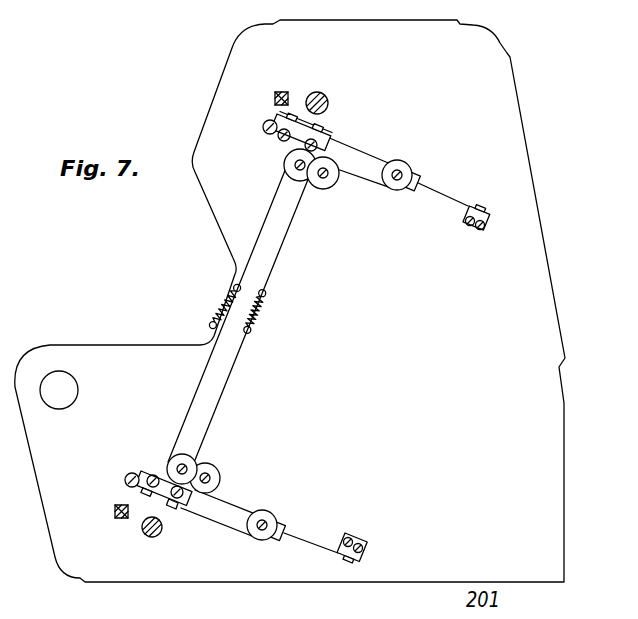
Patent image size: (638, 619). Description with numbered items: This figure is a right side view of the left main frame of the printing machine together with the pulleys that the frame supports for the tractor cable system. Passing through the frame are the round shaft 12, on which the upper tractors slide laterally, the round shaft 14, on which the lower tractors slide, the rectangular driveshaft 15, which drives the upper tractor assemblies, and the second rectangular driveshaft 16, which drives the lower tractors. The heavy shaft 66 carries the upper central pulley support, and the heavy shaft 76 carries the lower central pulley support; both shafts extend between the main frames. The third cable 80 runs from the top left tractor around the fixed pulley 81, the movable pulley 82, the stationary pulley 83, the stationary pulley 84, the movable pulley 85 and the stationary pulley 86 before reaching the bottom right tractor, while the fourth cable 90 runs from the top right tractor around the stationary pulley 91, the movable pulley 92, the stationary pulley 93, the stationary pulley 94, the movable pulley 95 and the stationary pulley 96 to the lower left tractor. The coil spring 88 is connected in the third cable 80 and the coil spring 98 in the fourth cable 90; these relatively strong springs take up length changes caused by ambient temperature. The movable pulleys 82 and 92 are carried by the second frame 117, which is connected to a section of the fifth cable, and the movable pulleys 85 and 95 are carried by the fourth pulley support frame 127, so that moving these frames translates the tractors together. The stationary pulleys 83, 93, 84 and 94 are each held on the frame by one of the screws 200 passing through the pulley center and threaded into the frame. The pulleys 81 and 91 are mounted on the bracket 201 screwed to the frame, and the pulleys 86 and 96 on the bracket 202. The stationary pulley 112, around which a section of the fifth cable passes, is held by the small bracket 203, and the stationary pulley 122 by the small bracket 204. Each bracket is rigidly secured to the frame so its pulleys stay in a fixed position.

The round shaft 12 is at (263, 127).
The round shaft 14 is at (125, 480).
The rectangular driveshaft 15 is at (284, 92).
The second rectangular driveshaft 16 is at (115, 513).
The heavy shaft 66 is at (327, 97).
The heavy shaft 76 is at (153, 538).
The third cable 80 is at (274, 195).
The fixed pulley 81 is at (281, 116).
The movable pulley 82 is at (391, 188).
The stationary pulley 83 is at (284, 166).
The stationary pulley 84 is at (170, 461).
The movable pulley 85 is at (266, 511).
The stationary pulley 86 is at (180, 509).
The coil spring 88 is at (228, 301).
The fourth cable 90 is at (298, 211).
The stationary pulley 91 is at (331, 137).
The movable pulley 92 is at (404, 163).
The stationary pulley 93 is at (336, 178).
The stationary pulley 94 is at (220, 479).
The movable pulley 95 is at (257, 541).
The stationary pulley 96 is at (136, 490).
The coil spring 98 is at (256, 325).
The stationary pulley 112 is at (491, 209).
The second frame 117 is at (414, 181).
The stationary pulley 122 is at (360, 563).
The fourth pulley support frame 127 is at (285, 531).
The screws 200 is at (178, 465).
The bracket 201 is at (278, 143).
The bracket 202 is at (141, 471).
The small bracket 203 is at (473, 231).
The small bracket 204 is at (359, 539).